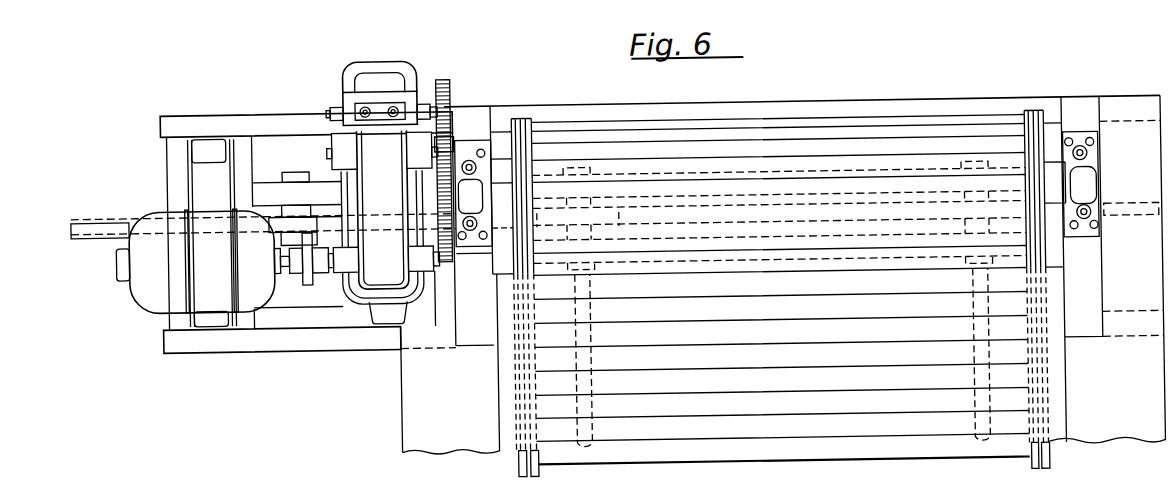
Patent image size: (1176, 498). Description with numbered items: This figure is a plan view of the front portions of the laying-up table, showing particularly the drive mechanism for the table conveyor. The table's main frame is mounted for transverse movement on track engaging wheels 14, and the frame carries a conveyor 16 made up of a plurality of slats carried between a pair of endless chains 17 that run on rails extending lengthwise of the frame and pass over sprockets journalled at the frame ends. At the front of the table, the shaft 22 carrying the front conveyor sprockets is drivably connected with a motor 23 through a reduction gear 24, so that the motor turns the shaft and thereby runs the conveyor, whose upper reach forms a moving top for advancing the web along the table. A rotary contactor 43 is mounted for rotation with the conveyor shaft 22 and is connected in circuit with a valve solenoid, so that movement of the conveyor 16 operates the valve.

The track engaging wheels 14 is at (295, 222).
The conveyor 16 is at (783, 318).
The endless chains 17 is at (538, 476).
The shaft 22 is at (1100, 178).
The motor 23 is at (160, 268).
The reduction gear 24 is at (394, 179).
The rotary contactor 43 is at (356, 97).